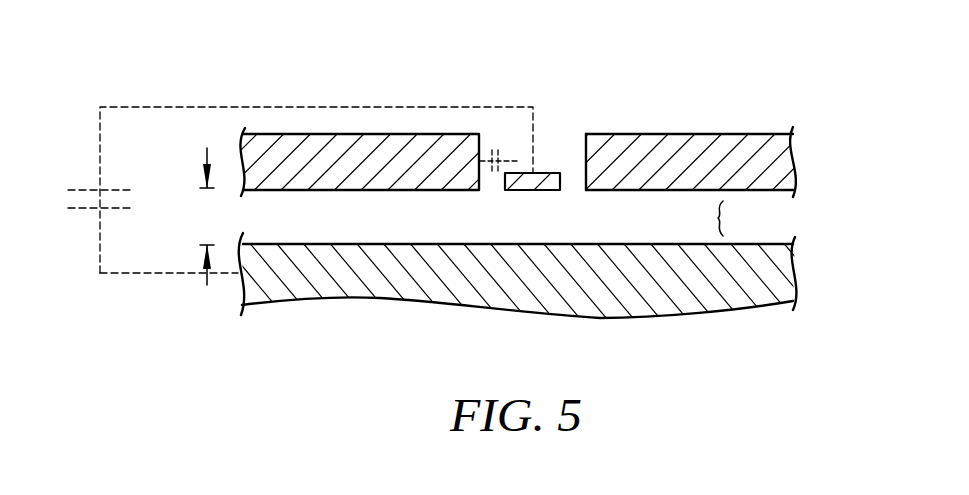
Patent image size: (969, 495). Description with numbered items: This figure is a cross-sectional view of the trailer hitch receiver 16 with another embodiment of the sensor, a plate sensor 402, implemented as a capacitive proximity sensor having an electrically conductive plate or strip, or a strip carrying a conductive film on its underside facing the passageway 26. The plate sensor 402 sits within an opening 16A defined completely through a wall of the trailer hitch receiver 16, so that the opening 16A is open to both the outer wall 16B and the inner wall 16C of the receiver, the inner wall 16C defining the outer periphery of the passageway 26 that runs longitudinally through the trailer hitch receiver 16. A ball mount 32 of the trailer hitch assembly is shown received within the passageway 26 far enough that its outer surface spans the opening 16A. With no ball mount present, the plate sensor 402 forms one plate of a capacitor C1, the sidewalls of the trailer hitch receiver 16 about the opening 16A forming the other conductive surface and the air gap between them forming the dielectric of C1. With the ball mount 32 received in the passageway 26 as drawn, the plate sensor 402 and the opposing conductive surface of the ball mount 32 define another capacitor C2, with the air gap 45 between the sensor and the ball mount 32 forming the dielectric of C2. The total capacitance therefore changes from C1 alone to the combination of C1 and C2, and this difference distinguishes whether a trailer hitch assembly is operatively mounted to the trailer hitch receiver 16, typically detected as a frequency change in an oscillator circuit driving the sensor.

The air gap 45 is at (206, 158).
The plate sensor 402 is at (552, 173).
The trailer hitch receiver 16 is at (680, 132).
The opening 16A is at (586, 145).
The outer wall 16B is at (760, 133).
The inner wall 16C is at (675, 190).
The passageway 26 is at (720, 218).
The ball mount 32 is at (794, 273).
The capacitor C1 is at (499, 143).
The capacitor C2 is at (80, 203).